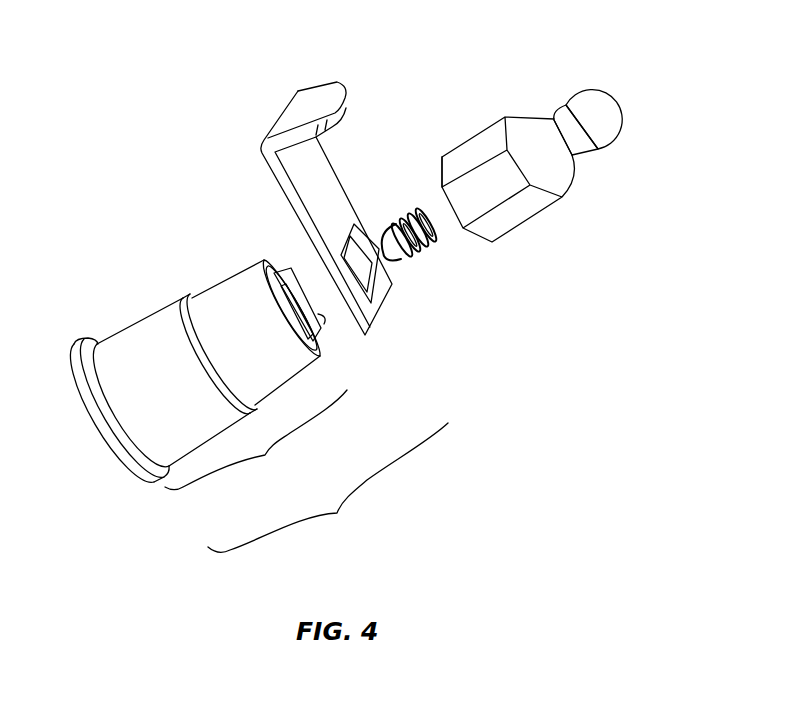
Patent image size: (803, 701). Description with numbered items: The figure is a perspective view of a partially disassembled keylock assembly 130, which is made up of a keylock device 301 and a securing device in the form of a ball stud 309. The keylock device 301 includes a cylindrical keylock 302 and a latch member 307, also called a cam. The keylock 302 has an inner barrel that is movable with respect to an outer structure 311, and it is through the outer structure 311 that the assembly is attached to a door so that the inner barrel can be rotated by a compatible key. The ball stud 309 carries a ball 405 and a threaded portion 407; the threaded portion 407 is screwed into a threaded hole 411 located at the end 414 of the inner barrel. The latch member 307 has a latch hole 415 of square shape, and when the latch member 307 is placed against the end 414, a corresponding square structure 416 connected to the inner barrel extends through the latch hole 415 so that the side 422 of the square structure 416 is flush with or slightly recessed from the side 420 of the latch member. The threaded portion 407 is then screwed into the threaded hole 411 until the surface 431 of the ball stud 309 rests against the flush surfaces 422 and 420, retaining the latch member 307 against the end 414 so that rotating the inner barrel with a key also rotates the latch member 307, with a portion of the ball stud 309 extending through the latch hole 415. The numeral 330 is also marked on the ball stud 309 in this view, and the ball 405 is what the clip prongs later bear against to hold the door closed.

The keylock assembly 130 is at (460, 443).
The keylock device 301 is at (328, 487).
The keylock 302 is at (246, 337).
The latch member 307 is at (277, 113).
The ball stud 309 is at (517, 87).
The outer structure 311 is at (190, 400).
The flat faces of knob 330 is at (605, 167).
The ball 405 is at (612, 77).
The threaded portion 407 is at (432, 272).
The threaded hole 411 is at (325, 315).
The end 414 is at (283, 270).
The latch hole 415 is at (350, 225).
The square structure 416 is at (288, 270).
The side 420 is at (318, 187).
The side 422 is at (330, 322).
The surface 431 is at (441, 165).